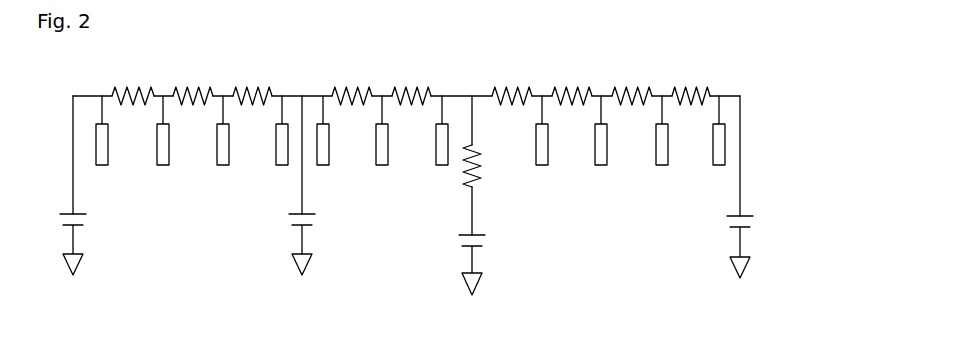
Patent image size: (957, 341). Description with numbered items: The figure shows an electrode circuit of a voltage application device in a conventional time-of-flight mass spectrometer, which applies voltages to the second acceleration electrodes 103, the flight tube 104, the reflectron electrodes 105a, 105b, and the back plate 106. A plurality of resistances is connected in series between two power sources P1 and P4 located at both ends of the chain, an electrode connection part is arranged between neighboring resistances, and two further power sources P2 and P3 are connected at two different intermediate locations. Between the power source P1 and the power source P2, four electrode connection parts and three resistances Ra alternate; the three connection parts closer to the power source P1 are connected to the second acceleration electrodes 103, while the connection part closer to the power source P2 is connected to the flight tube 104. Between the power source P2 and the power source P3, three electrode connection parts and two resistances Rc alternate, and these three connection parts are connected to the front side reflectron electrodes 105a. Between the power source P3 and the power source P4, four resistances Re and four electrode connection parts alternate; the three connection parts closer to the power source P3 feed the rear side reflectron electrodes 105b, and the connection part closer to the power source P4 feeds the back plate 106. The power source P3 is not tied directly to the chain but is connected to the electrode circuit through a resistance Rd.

The resistance Ra is at (252, 80).
The resistance Rc is at (415, 80).
The resistance Re is at (691, 79).
The resistance Rd is at (490, 170).
The second acceleration electrodes 103 is at (223, 174).
The flight tube 104 is at (282, 167).
The front side reflectron electrodes 105a is at (443, 174).
The rear side reflectron electrodes 105b is at (662, 174).
The back plate 106 is at (718, 167).
The power source P1 is at (88, 228).
The power source P2 is at (317, 228).
The power source P3 is at (487, 250).
The power source P4 is at (755, 232).